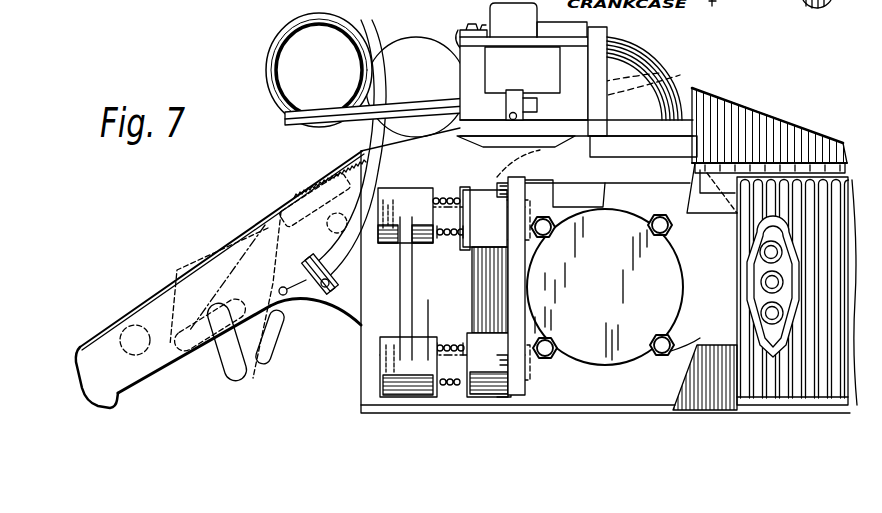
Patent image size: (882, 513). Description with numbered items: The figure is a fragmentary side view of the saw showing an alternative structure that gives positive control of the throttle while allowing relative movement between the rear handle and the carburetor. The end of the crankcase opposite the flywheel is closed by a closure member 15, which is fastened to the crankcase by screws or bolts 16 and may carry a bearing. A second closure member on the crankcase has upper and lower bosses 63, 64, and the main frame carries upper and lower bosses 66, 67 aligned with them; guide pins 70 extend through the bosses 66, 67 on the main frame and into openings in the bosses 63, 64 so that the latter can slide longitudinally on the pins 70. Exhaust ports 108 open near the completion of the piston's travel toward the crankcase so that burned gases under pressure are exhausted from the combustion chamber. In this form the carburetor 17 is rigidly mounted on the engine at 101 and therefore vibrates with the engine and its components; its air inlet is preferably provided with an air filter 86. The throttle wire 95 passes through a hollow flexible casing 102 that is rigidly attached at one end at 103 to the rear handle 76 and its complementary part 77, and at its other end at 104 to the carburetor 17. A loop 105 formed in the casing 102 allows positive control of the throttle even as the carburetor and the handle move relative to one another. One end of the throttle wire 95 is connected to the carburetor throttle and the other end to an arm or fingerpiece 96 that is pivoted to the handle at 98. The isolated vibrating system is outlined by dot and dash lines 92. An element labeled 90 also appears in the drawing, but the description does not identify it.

The closure member 15 is at (670, 288).
The screws or bolts 16 is at (549, 238).
The carburetor 17 is at (461, 50).
The upper boss 63 is at (472, 192).
The lower boss 64 is at (465, 340).
The upper boss 66 is at (400, 192).
The lower boss 67 is at (379, 382).
The guide pins 70 is at (445, 195).
The rear handle 76 is at (103, 330).
The complementary part 77 is at (148, 300).
The air filter 86 is at (404, 44).
The spring seats 90 is at (443, 238).
The dot and dash lines 92 is at (657, 57).
The throttle wire 95 is at (596, 94).
The arm or fingerpiece 96 is at (256, 374).
The pivot 98 is at (268, 216).
The carburetor mounting 101 is at (692, 125).
The hollow flexible casing 102 is at (337, 257).
The casing attachment to handle 103 is at (331, 283).
The casing attachment to carburetor 104 is at (515, 90).
The loop 105 is at (264, 66).
The exhaust ports 108 is at (761, 315).